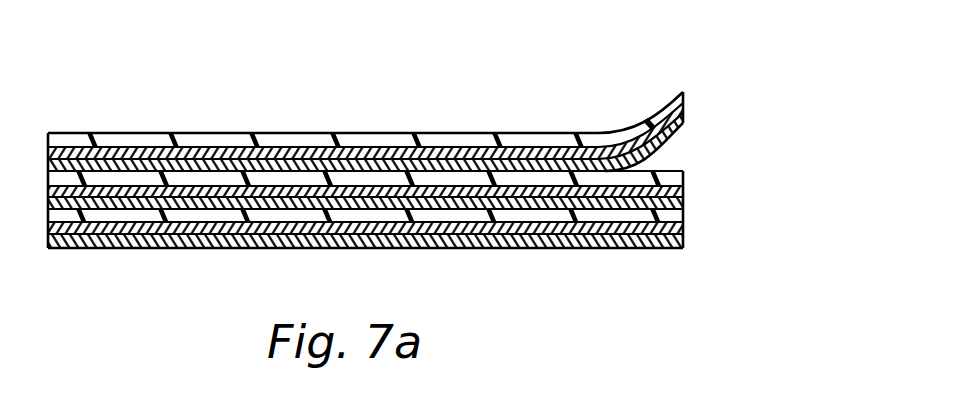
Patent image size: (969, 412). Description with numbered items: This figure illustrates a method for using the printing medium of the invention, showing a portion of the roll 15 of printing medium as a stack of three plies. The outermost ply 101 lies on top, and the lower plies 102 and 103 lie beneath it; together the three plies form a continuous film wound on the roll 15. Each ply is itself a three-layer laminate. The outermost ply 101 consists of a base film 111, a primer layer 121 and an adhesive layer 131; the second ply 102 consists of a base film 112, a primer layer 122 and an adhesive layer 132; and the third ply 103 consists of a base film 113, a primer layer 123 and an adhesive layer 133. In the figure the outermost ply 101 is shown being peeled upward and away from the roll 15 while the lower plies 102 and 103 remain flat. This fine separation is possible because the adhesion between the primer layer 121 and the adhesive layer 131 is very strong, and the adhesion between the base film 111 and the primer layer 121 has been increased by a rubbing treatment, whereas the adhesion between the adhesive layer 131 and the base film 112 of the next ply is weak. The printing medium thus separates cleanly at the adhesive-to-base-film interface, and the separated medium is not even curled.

The roll 15 is at (449, 168).
The outermost ply 101 is at (450, 88).
The lower ply 102 is at (450, 172).
The lower ply 103 is at (450, 269).
The base film 111 is at (683, 95).
The primer layer 121 is at (683, 108).
The adhesive layer 131 is at (683, 120).
The base film 112 is at (683, 178).
The primer layer 122 is at (683, 192).
The adhesive layer 132 is at (683, 204).
The base film 113 is at (683, 216).
The primer layer 123 is at (683, 229).
The adhesive layer 133 is at (683, 242).